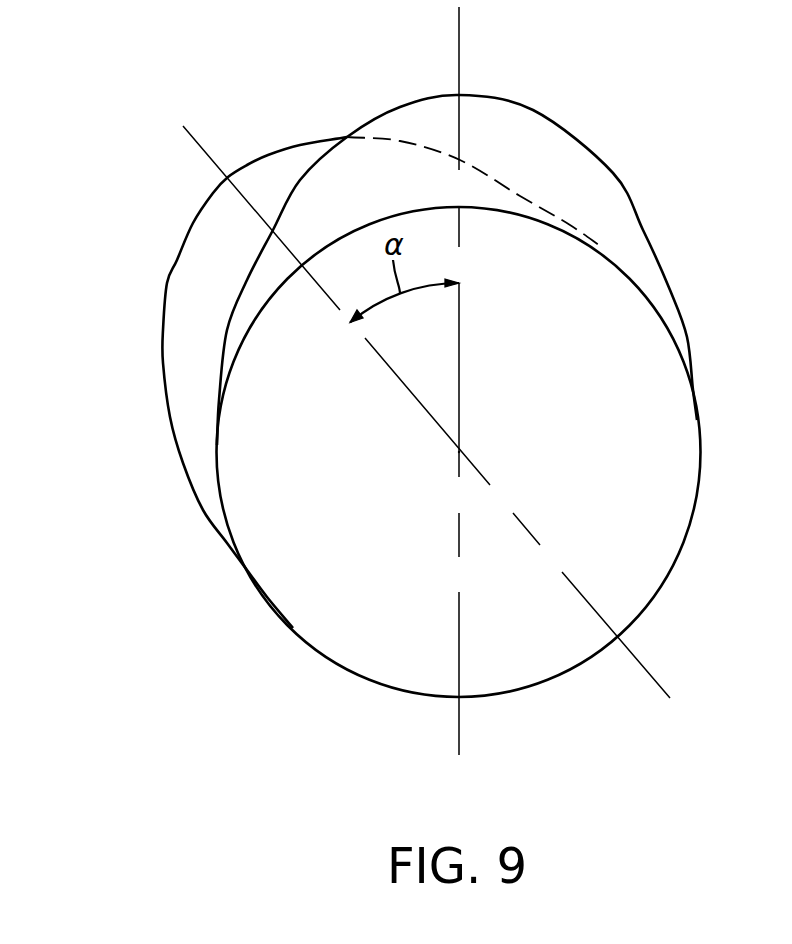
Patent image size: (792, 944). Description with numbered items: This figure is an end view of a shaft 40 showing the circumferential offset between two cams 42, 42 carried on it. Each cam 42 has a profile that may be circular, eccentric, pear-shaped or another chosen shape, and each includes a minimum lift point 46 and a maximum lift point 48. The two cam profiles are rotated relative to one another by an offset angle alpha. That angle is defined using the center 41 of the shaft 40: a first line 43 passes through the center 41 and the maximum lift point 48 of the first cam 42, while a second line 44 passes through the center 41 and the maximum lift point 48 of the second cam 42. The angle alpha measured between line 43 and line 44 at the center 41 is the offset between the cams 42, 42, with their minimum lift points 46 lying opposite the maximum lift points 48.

The shaft 40 is at (627, 522).
The center 41 is at (460, 452).
The cam 42 is at (598, 205).
The line 43 is at (460, 309).
The line 44 is at (382, 360).
The minimum lift point 46 is at (460, 696).
The maximum lift point 48 is at (228, 177).